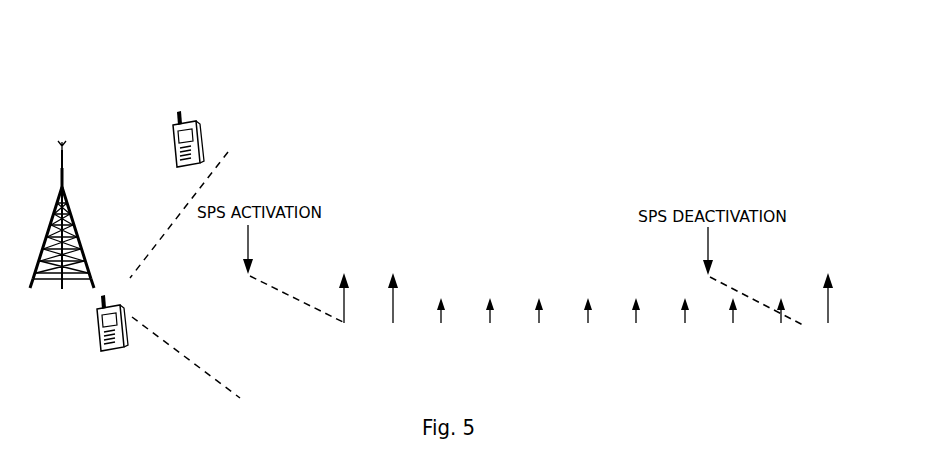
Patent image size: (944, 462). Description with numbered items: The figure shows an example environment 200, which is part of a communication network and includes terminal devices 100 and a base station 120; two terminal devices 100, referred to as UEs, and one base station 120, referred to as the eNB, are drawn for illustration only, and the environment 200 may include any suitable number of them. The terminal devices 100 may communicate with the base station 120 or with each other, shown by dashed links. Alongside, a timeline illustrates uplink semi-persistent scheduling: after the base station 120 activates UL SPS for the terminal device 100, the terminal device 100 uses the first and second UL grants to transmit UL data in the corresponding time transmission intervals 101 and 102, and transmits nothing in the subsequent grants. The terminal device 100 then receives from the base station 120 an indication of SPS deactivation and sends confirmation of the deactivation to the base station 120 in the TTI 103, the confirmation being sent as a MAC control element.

The environment 200 is at (124, 78).
The terminal device 100 is at (194, 118).
The base station 120 is at (80, 166).
The time transmission interval 101 is at (347, 268).
The time transmission interval 102 is at (396, 268).
The TTI 103 is at (828, 270).